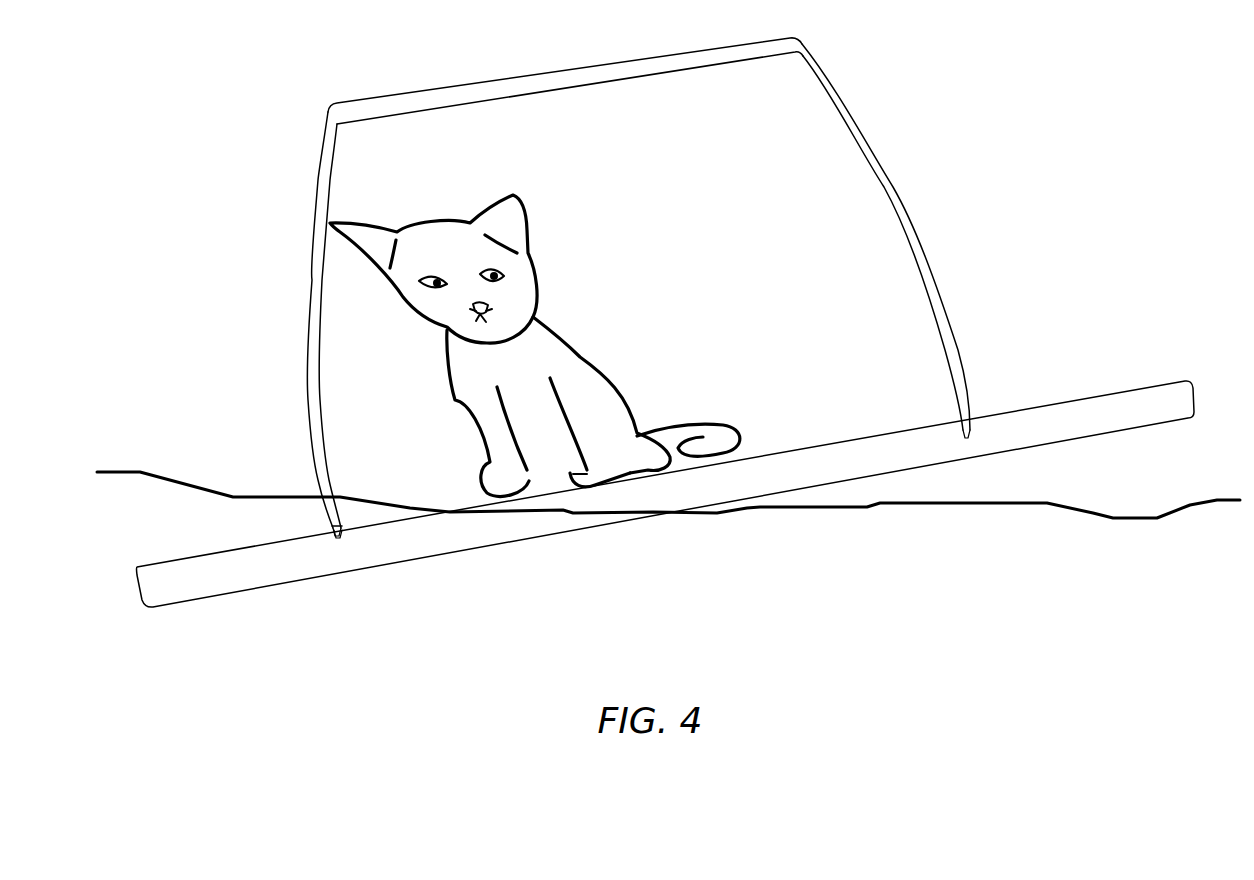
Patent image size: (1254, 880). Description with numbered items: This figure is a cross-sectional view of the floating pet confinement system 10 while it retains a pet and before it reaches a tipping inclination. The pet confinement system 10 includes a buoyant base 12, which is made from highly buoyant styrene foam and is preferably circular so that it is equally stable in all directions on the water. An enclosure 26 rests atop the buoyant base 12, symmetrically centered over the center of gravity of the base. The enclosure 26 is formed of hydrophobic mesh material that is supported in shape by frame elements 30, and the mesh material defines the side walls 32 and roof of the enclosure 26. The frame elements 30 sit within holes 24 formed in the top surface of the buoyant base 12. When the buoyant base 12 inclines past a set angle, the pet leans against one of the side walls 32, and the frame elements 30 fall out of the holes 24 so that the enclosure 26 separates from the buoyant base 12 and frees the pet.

The floating pet confinement system 10 is at (614, 287).
The buoyant base 12 is at (1038, 405).
The holes 24 is at (342, 537).
The enclosure 26 is at (927, 257).
The frame elements 30 is at (333, 537).
The side walls 32 is at (312, 278).